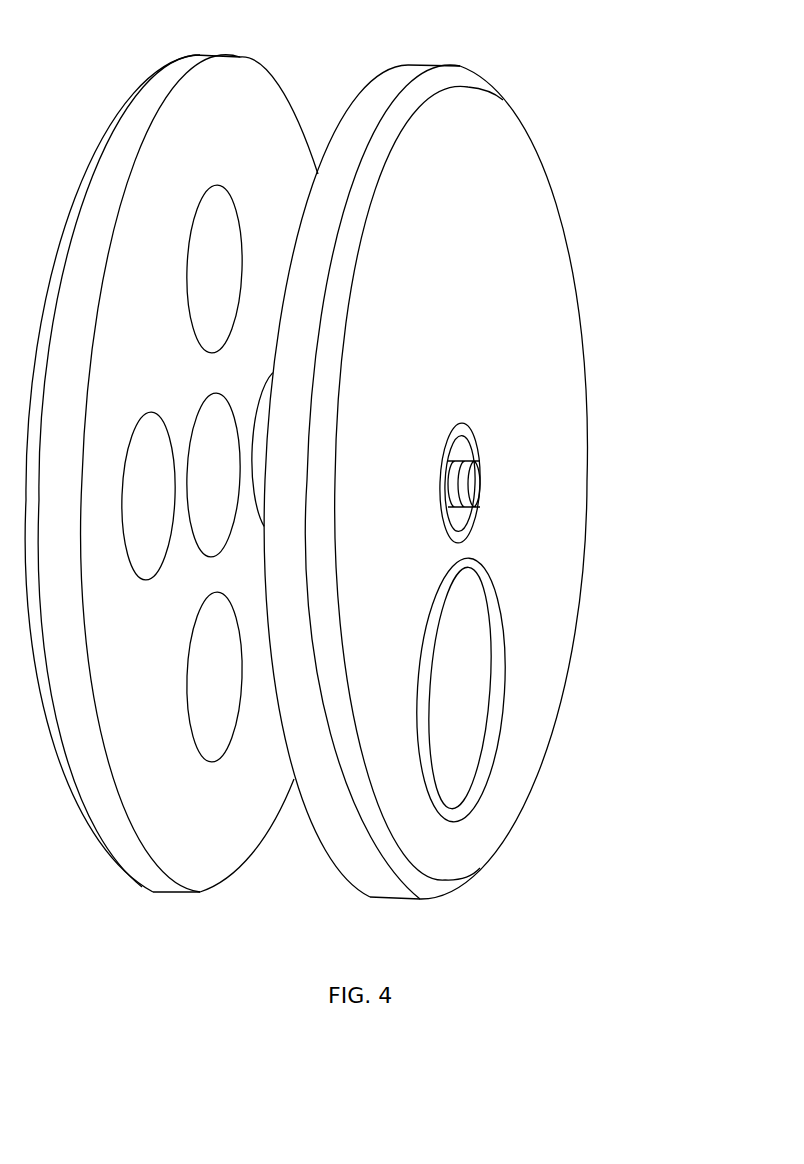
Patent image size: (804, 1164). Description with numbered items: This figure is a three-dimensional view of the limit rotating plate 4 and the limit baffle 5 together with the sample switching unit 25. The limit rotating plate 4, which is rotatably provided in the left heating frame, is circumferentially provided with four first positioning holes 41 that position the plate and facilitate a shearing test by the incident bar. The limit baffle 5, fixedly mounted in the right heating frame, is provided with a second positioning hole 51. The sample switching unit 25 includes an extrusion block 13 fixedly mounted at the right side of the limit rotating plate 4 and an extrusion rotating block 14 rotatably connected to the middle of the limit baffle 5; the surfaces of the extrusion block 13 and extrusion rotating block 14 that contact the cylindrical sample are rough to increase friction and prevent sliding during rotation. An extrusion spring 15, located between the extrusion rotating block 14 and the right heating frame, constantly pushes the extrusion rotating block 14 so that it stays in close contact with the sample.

The limit rotating plate 4 is at (167, 162).
The first positioning holes 41 is at (190, 730).
The extrusion block 13 is at (217, 438).
The limit baffle 5 is at (437, 147).
The second positioning hole 51 is at (485, 789).
The extrusion rotating block 14 is at (462, 447).
The extrusion spring 15 is at (467, 488).
The sample switching unit 25 is at (438, 380).